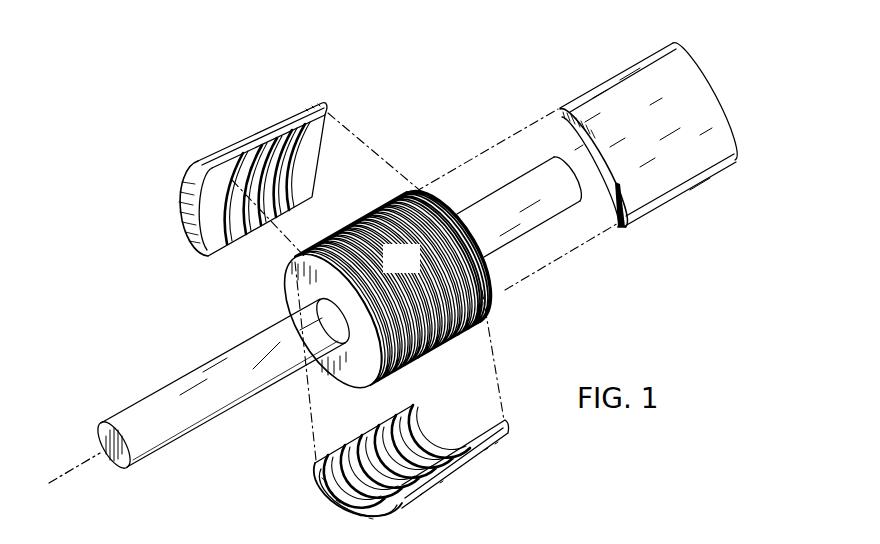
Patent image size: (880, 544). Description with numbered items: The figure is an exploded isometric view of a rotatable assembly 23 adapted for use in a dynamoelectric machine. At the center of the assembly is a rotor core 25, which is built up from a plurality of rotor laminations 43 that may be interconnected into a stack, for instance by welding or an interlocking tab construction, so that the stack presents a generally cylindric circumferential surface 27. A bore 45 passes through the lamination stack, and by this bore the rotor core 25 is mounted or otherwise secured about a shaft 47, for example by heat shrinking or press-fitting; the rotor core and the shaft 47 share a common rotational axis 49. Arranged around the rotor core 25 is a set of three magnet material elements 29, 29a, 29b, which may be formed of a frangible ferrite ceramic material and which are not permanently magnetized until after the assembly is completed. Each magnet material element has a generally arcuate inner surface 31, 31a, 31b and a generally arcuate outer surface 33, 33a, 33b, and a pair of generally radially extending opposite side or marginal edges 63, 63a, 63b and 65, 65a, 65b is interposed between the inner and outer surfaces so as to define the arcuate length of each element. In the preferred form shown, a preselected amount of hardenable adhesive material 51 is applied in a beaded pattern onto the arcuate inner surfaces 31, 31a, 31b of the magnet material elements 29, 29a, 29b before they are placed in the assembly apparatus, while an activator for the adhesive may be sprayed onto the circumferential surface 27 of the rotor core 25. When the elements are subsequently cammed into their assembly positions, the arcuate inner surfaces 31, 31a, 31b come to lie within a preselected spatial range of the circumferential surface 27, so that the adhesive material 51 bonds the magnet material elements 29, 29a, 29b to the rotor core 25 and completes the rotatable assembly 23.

The rotatable assembly 23 is at (519, 335).
The rotor core 25 is at (378, 285).
The circumferential surface 27 is at (363, 227).
The magnet material element 29 is at (193, 158).
The magnet material element 29a is at (593, 81).
The magnet material element 29b is at (475, 475).
The arcuate inner surface 31 is at (194, 245).
The arcuate inner surface 31a is at (615, 188).
The arcuate inner surface 31b is at (327, 486).
The arcuate outer surface 33 is at (182, 207).
The arcuate outer surface 33a is at (707, 150).
The arcuate outer surface 33b is at (357, 514).
The rotor laminations 43 is at (437, 340).
The bore 45 is at (323, 341).
The shaft 47 is at (158, 390).
The rotational axis 49 is at (72, 469).
The hardenable adhesive material 51 is at (254, 234).
The marginal edge 63 is at (206, 262).
The marginal edge 63a is at (559, 109).
The marginal edge 63b is at (506, 424).
The marginal edge 65 is at (330, 107).
The marginal edge 65a is at (621, 231).
The marginal edge 65b is at (316, 464).